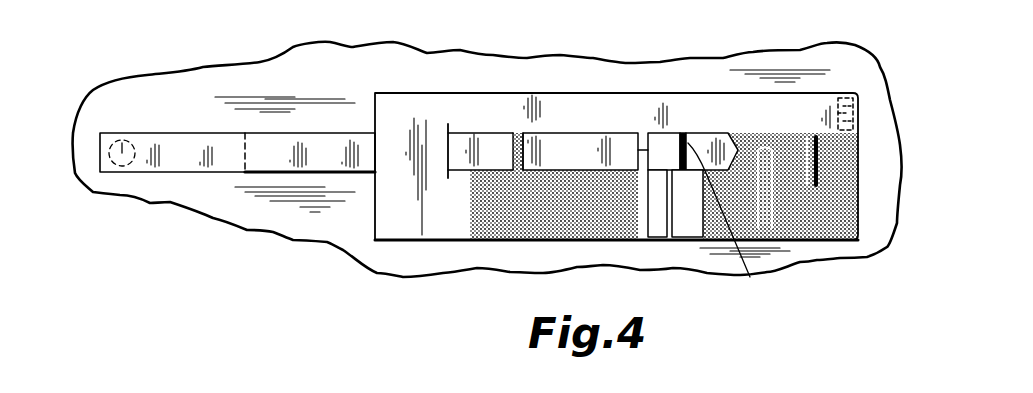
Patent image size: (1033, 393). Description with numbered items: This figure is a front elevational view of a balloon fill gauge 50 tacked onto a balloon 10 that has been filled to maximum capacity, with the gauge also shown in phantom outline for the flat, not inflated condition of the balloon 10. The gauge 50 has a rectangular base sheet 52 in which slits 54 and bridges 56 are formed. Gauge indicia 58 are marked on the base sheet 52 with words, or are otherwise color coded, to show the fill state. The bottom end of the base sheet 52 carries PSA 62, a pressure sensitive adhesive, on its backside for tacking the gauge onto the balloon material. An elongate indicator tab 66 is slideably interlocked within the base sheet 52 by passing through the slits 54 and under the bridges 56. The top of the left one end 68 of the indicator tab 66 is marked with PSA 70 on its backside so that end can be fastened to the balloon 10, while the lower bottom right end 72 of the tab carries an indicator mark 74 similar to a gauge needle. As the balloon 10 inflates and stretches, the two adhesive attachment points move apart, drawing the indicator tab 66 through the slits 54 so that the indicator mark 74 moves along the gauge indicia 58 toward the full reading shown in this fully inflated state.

The balloon 10 is at (363, 68).
The balloon fill gauge 50 is at (558, 93).
The rectangular base sheet 52 is at (607, 108).
The slits 54 is at (452, 147).
The bridges 56 is at (513, 155).
The gauge indicia 58 is at (667, 233).
The PSA 62 is at (848, 93).
The indicator tab 66 is at (320, 147).
The left one end 68 is at (252, 140).
The PSA 70 is at (119, 138).
The lower bottom right end 72 is at (718, 140).
The indicator mark 74 is at (714, 224).